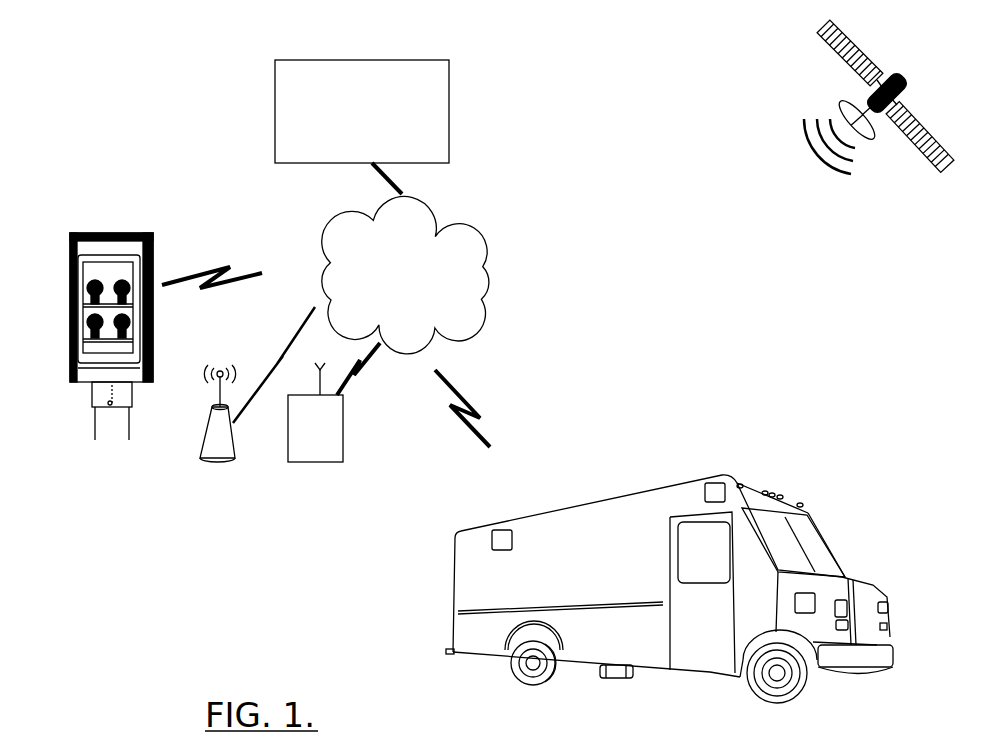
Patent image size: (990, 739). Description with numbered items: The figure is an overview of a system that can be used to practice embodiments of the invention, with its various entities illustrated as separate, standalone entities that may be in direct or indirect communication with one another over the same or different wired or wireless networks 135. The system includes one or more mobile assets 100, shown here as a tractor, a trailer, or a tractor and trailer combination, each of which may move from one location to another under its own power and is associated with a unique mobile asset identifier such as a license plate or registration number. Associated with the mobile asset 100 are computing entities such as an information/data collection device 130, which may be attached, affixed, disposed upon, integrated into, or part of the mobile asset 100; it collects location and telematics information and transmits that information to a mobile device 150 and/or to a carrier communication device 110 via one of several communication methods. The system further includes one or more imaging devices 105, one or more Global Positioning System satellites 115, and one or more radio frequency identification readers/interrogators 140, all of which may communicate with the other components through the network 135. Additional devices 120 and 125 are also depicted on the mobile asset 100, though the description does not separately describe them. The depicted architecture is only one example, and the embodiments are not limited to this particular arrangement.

The mobile asset 100 is at (705, 578).
The imaging device 105 is at (90, 318).
The carrier communication device 110 is at (358, 99).
The Global Positioning System (GPS) satellite 115 is at (879, 97).
The vehicle sensor device 120 is at (686, 478).
The vehicle sensor device 125 is at (473, 525).
The information/data collection device 130 is at (851, 568).
The network 135 is at (405, 274).
The radio frequency identification (RFID) reader/interrogator 140 is at (218, 413).
The mobile device 150 is at (331, 437).